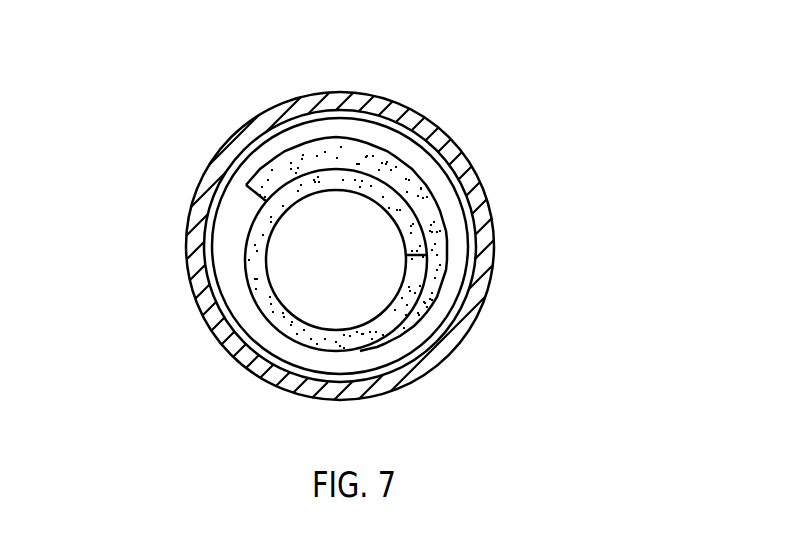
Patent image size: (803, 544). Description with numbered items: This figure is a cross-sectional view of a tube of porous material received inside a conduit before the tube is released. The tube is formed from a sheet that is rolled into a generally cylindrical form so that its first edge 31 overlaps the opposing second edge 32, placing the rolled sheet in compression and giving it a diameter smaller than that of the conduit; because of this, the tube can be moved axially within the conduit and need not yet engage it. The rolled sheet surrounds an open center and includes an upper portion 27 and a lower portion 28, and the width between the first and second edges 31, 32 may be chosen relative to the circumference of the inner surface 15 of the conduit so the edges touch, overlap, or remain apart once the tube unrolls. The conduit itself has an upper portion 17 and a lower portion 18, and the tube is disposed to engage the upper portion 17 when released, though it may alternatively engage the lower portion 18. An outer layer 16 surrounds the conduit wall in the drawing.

The inner surface 15 is at (477, 211).
The outer layer 16 is at (432, 156).
The upper portion 17 is at (361, 63).
The lower portion 18 is at (428, 400).
The upper portion 27 is at (294, 140).
The lower portion 28 is at (283, 373).
The first edge 31 is at (265, 199).
The second edge 32 is at (428, 255).